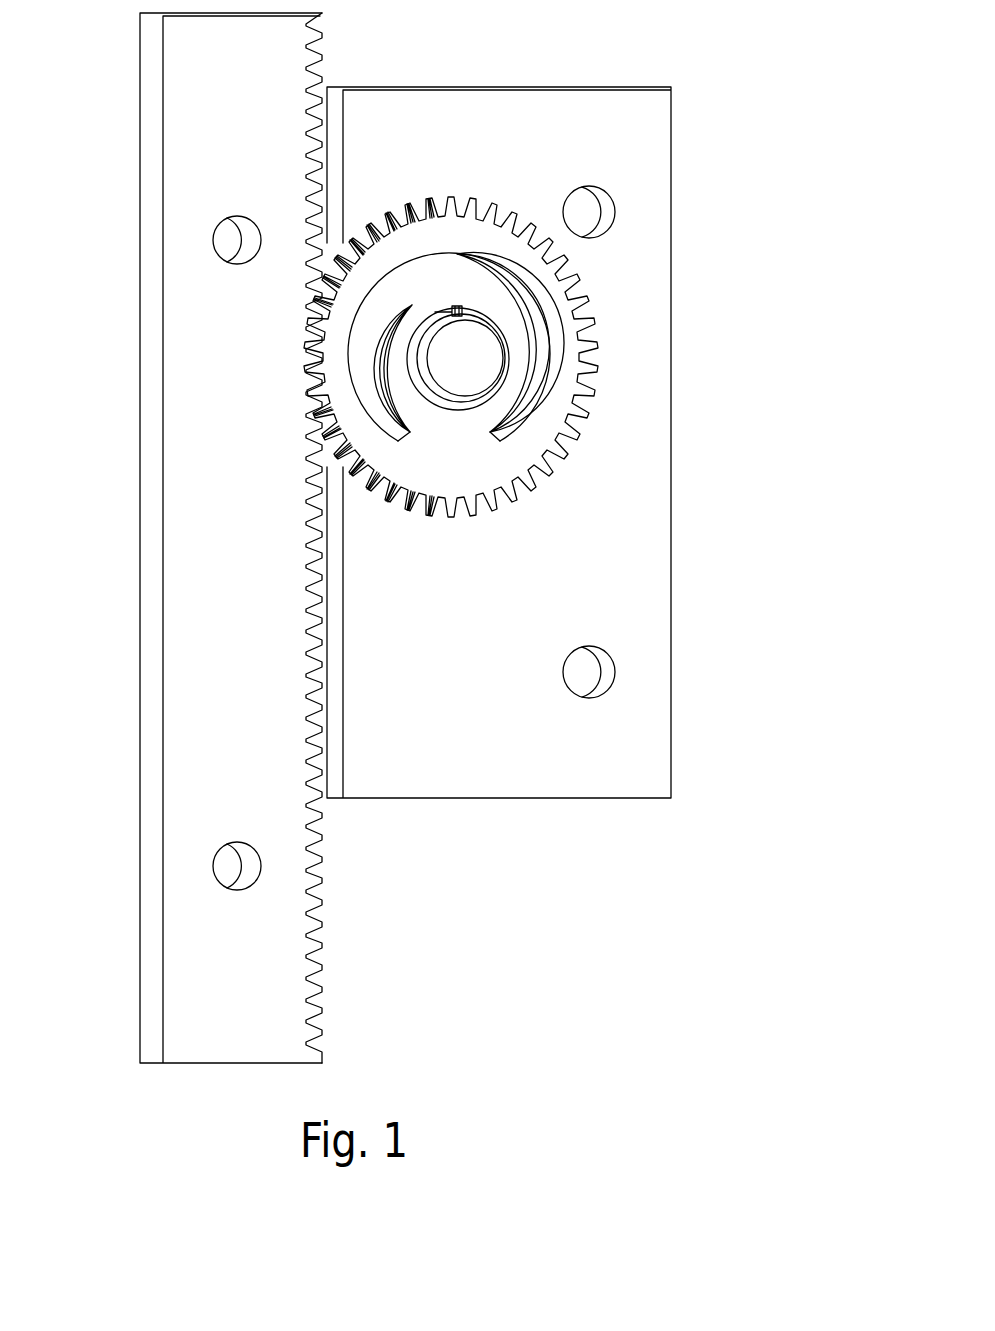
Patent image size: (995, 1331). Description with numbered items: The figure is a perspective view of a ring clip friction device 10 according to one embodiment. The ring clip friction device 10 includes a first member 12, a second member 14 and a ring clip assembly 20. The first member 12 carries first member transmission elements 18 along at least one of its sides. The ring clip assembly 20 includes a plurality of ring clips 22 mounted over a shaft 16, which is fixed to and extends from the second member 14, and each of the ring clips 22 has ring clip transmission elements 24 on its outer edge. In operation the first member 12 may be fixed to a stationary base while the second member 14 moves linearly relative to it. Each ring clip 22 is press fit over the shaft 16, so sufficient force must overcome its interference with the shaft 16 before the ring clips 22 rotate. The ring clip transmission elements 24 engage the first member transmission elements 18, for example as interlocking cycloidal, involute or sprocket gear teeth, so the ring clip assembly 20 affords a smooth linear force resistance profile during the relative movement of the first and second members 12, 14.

The ring clip friction device 10 is at (736, 170).
The first member 12 is at (192, 662).
The second member 14 is at (617, 752).
The shaft 16 is at (460, 335).
The first member transmission elements 18 is at (321, 930).
The ring clip assembly 20 is at (530, 448).
The ring clip 22 is at (557, 355).
The ring clip transmission elements 24 is at (447, 522).